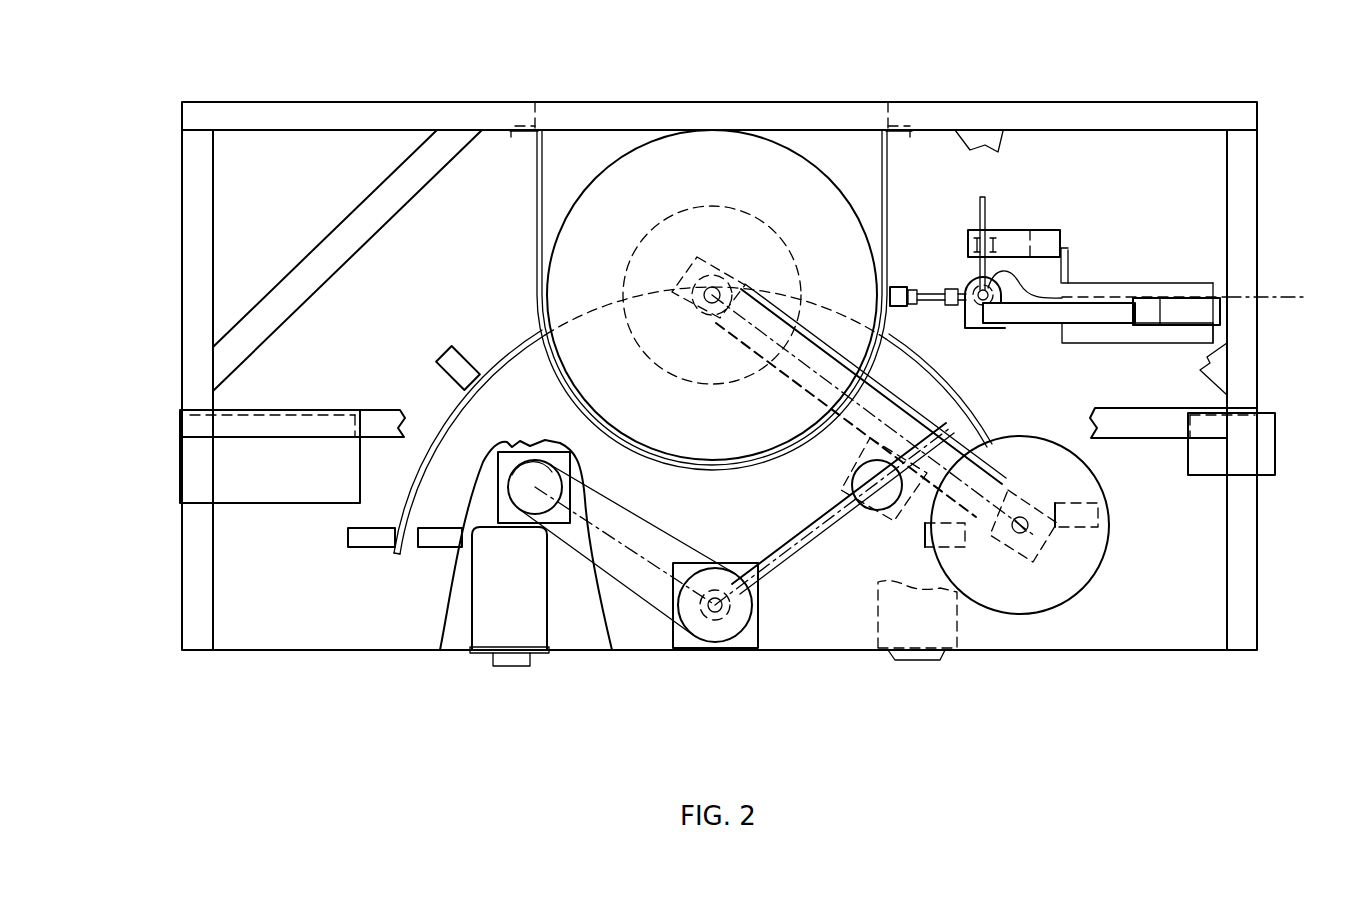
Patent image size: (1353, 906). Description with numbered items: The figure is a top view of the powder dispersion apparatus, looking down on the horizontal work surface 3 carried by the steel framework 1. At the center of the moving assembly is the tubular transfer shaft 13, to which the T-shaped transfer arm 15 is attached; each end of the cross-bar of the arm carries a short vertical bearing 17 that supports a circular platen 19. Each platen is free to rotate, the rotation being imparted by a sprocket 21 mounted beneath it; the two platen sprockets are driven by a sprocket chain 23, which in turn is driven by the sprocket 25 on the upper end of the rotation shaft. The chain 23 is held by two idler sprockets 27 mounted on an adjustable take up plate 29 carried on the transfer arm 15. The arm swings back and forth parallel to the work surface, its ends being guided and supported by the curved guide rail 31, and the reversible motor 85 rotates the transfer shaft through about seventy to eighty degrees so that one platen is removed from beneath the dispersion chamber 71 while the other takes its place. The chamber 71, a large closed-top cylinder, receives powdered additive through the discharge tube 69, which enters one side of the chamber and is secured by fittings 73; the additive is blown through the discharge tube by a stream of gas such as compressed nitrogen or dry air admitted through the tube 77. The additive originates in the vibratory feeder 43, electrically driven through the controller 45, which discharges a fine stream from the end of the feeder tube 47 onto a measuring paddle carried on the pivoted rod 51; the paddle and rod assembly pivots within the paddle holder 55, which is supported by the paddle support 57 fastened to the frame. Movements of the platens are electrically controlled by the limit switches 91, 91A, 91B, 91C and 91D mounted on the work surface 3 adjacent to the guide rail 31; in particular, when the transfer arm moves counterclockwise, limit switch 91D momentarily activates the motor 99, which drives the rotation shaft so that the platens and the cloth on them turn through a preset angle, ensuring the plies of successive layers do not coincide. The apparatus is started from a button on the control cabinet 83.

The steel framework 1 is at (458, 112).
The horizontal work surface 3 is at (347, 260).
The tubular transfer shaft 13 is at (717, 600).
The transfer arm 15 is at (772, 538).
The vertical bearing 17 is at (1043, 547).
The circular platen 19 is at (1083, 590).
The sprocket 21 is at (713, 276).
The sprocket chain 23 is at (965, 435).
The sprocket 25 is at (733, 660).
The idler sprocket 27 is at (870, 510).
The adjustable take up plate 29 is at (828, 467).
The curved guide rail 31 is at (400, 556).
The vibratory feeder 43 is at (1182, 312).
The controller 45 is at (1255, 451).
The feeder tube 47 is at (1030, 312).
The rod 51 is at (995, 245).
The paddle holder 55 is at (1035, 245).
The paddle support 57 is at (1048, 242).
The discharge tube 69 is at (900, 280).
The dispersion chamber 71 is at (802, 153).
The fittings 73 is at (926, 285).
The tube 77 is at (1020, 282).
The control cabinet 83 is at (180, 470).
The reversible motor 85 is at (940, 660).
The limit switch 91 is at (360, 549).
The limit switch 91A is at (1083, 515).
The limit switch 91B is at (440, 549).
The limit switch 91C is at (938, 535).
The limit switch 91D is at (462, 355).
The motor 99 is at (587, 568).